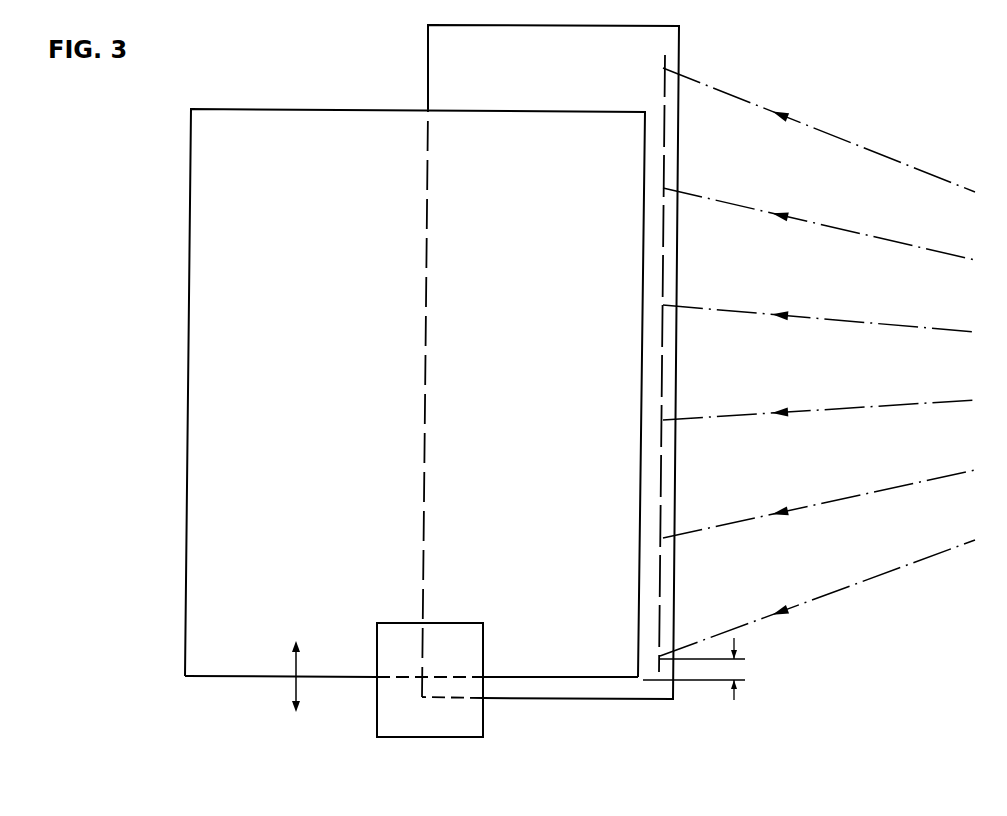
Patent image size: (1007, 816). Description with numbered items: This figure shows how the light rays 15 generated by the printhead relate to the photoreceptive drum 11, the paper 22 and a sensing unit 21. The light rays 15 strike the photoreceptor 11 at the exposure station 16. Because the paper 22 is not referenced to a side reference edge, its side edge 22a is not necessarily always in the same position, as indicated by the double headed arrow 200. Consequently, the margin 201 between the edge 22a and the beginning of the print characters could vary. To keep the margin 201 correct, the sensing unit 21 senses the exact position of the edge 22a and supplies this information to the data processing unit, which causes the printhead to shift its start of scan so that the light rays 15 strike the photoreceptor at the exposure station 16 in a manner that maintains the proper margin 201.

The photoreceptive drum 11 is at (440, 72).
The paper 22 is at (414, 401).
The side edge 22a is at (232, 679).
The exposure station 16 is at (663, 100).
The light rays 15 is at (847, 138).
The sensing unit 21 is at (468, 729).
The double headed arrow 200 is at (300, 691).
The margin 201 is at (733, 671).